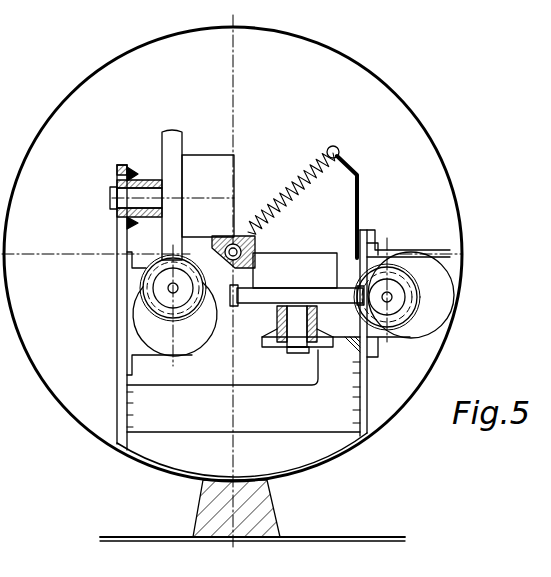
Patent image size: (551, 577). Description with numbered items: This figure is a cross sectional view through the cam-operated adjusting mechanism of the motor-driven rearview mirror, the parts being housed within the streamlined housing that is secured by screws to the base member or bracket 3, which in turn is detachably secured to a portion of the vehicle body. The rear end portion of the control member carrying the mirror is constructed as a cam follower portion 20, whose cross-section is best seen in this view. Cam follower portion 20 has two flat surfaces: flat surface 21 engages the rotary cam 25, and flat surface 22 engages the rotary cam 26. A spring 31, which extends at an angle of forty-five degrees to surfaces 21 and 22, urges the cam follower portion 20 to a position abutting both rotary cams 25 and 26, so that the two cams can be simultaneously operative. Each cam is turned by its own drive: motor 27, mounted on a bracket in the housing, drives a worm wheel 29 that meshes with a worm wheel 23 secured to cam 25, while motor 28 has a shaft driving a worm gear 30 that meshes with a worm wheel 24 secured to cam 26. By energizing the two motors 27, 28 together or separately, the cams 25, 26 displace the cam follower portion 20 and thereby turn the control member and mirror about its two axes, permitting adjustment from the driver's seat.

The base member or bracket 3 is at (263, 522).
The cam follower portion 20 is at (213, 247).
The flat surface 21 is at (237, 238).
The flat surface 22 is at (257, 266).
The worm wheel 23 is at (170, 163).
The worm wheel 24 is at (257, 300).
The rotary cam 25 is at (193, 170).
The rotary cam 26 is at (323, 260).
The motor 27 is at (147, 319).
The motor 28 is at (430, 277).
The worm wheel 29 is at (183, 313).
The worm gear 30 is at (388, 328).
The spring 31 is at (312, 167).